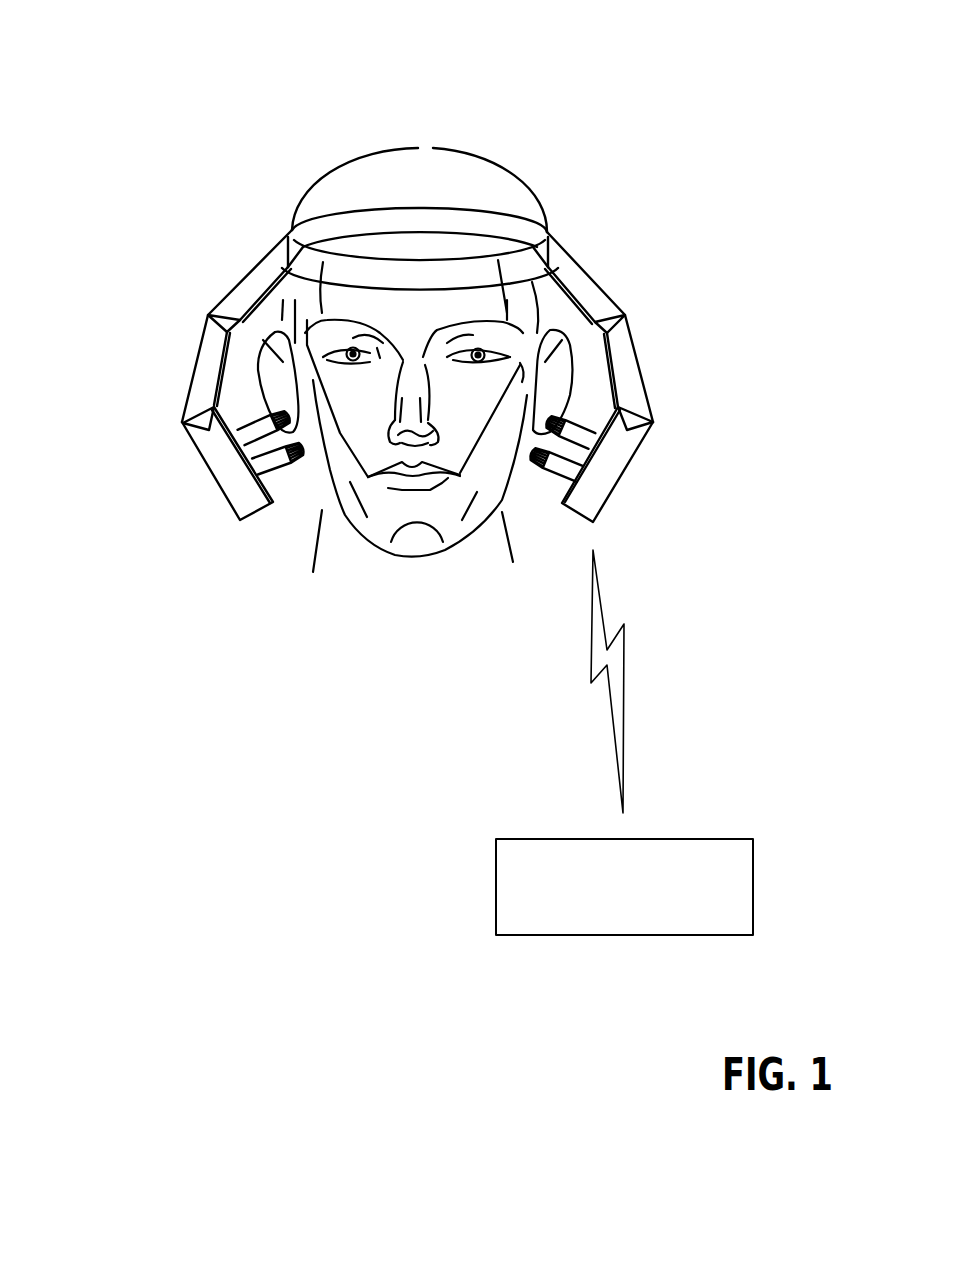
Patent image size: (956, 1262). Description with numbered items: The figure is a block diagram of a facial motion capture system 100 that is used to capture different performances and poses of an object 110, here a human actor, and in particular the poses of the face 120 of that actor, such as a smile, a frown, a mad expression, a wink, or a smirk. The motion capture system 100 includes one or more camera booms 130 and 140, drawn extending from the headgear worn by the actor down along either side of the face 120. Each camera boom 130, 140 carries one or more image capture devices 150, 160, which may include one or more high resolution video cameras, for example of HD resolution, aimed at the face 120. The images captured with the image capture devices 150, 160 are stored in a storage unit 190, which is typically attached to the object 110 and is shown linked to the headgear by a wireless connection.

The motion capture system 100 is at (414, 113).
The object 110 is at (465, 178).
The face 120 is at (583, 252).
The camera boom 130 is at (207, 317).
The camera boom 140 is at (627, 317).
The image capture device 150 is at (630, 500).
The image capture device 160 is at (188, 490).
The storage unit 190 is at (496, 871).